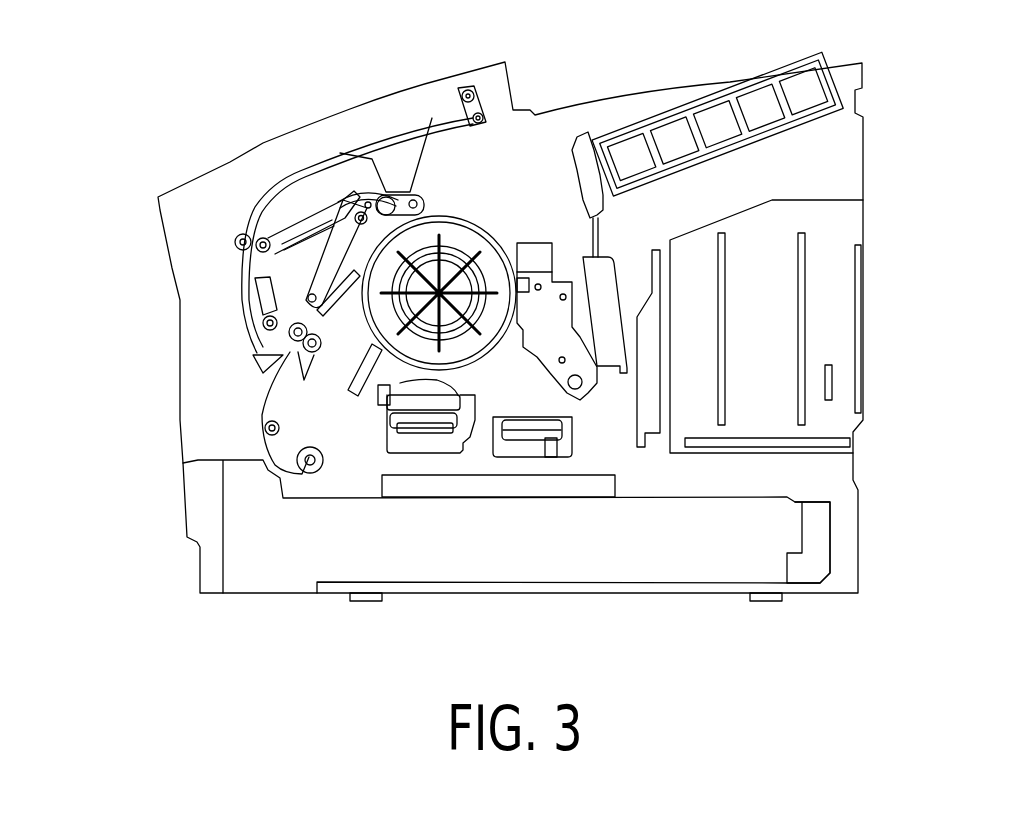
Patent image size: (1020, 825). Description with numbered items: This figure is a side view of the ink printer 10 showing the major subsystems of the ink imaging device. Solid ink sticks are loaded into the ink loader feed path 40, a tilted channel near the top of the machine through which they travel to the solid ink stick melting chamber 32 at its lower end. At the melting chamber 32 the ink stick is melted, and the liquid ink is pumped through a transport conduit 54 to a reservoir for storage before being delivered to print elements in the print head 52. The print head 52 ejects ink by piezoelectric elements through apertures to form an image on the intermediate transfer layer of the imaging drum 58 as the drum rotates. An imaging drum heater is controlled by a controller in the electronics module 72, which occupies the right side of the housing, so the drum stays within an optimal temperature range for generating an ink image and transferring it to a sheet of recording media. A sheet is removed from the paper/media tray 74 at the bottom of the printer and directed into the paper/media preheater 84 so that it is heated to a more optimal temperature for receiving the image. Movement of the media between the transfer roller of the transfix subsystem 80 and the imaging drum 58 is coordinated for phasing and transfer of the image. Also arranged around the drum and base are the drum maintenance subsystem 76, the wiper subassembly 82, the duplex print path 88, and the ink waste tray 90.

The ink printer 10 is at (115, 357).
The solid ink stick melting chamber 32 is at (582, 135).
The ink loader feed path 40 is at (705, 103).
The print head 52 is at (535, 240).
The transport conduit 54 is at (597, 243).
The imaging drum 58 is at (457, 230).
The electronics module 72 is at (824, 198).
The paper/media tray 74 is at (772, 563).
The drum maintenance subsystem 76 is at (420, 457).
The transfix subsystem 80 is at (363, 215).
The wiper subassembly 82 is at (357, 388).
The paper/media preheater 84 is at (290, 355).
The duplex print path 88 is at (258, 210).
The ink waste tray 90 is at (543, 457).